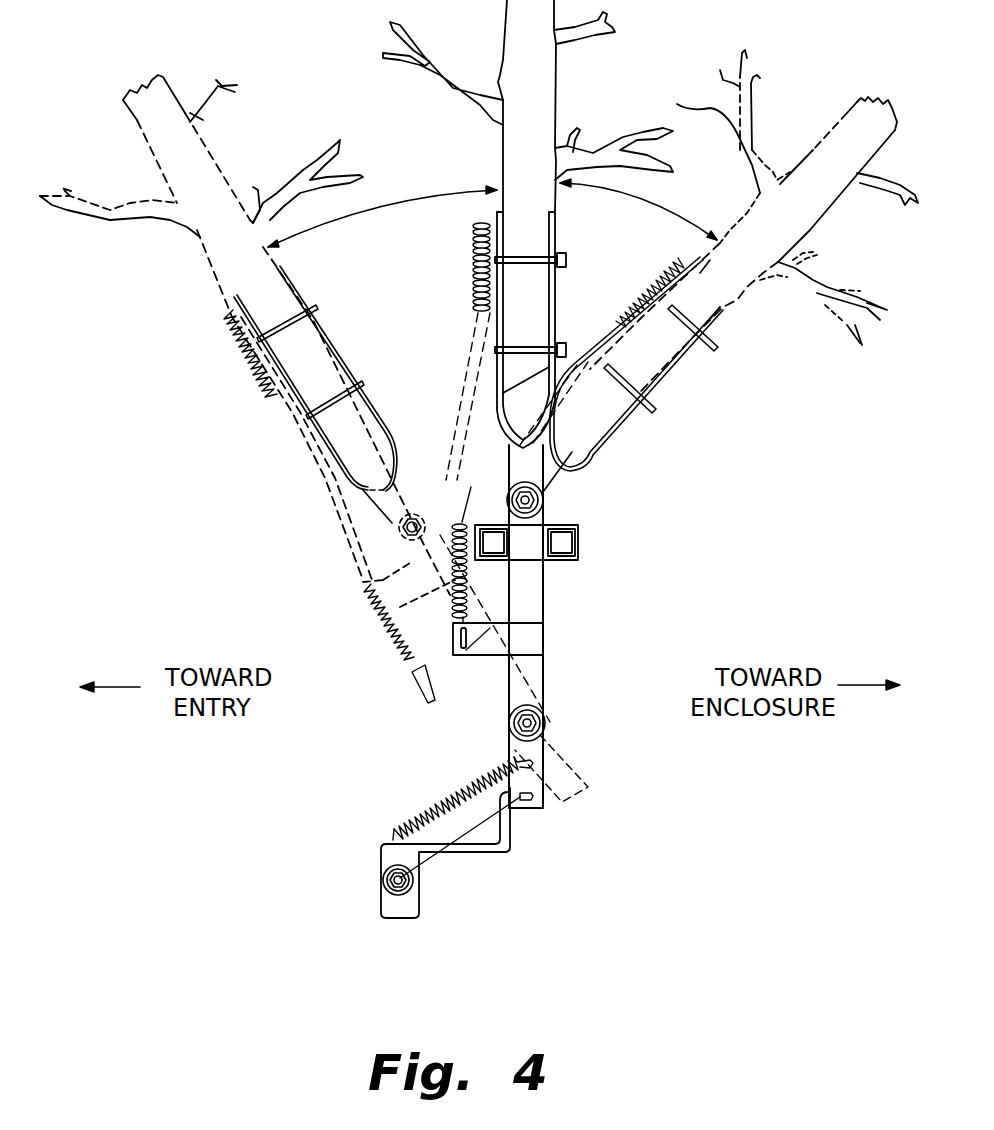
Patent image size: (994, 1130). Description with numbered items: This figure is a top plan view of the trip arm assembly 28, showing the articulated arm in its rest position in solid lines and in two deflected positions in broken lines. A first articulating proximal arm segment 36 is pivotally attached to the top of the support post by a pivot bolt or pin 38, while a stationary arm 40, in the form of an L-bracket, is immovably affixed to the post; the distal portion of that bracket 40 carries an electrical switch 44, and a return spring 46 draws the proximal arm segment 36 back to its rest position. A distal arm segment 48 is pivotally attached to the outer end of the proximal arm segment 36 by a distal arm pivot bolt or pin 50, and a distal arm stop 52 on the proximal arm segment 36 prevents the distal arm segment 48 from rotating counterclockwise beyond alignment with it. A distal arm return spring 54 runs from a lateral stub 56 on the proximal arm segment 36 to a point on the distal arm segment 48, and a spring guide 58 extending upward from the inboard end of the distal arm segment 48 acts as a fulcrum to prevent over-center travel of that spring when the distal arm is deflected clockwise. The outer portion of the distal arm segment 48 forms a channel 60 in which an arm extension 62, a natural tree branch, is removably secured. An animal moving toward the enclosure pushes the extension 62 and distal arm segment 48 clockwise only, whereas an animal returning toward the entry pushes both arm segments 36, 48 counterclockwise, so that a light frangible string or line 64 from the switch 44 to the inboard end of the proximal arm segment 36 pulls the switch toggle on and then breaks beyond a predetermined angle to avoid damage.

The trip arm assembly 28 is at (151, 895).
The proximal arm segment 36 is at (543, 600).
The pivot bolt or pin 38 is at (547, 710).
The stationary arm 40 is at (512, 850).
The electrical switch 44 is at (383, 882).
The return spring 46 is at (425, 812).
The distal arm segment 48 is at (500, 453).
The distal arm pivot bolt or pin 50 is at (543, 495).
The distal arm stop 52 is at (578, 541).
The distal arm return spring 54 is at (473, 252).
The lateral stub 56 is at (533, 642).
The spring guide 58 is at (462, 522).
The channel 60 is at (478, 322).
The arm extension 62 is at (555, 80).
The string or line 64 is at (550, 790).